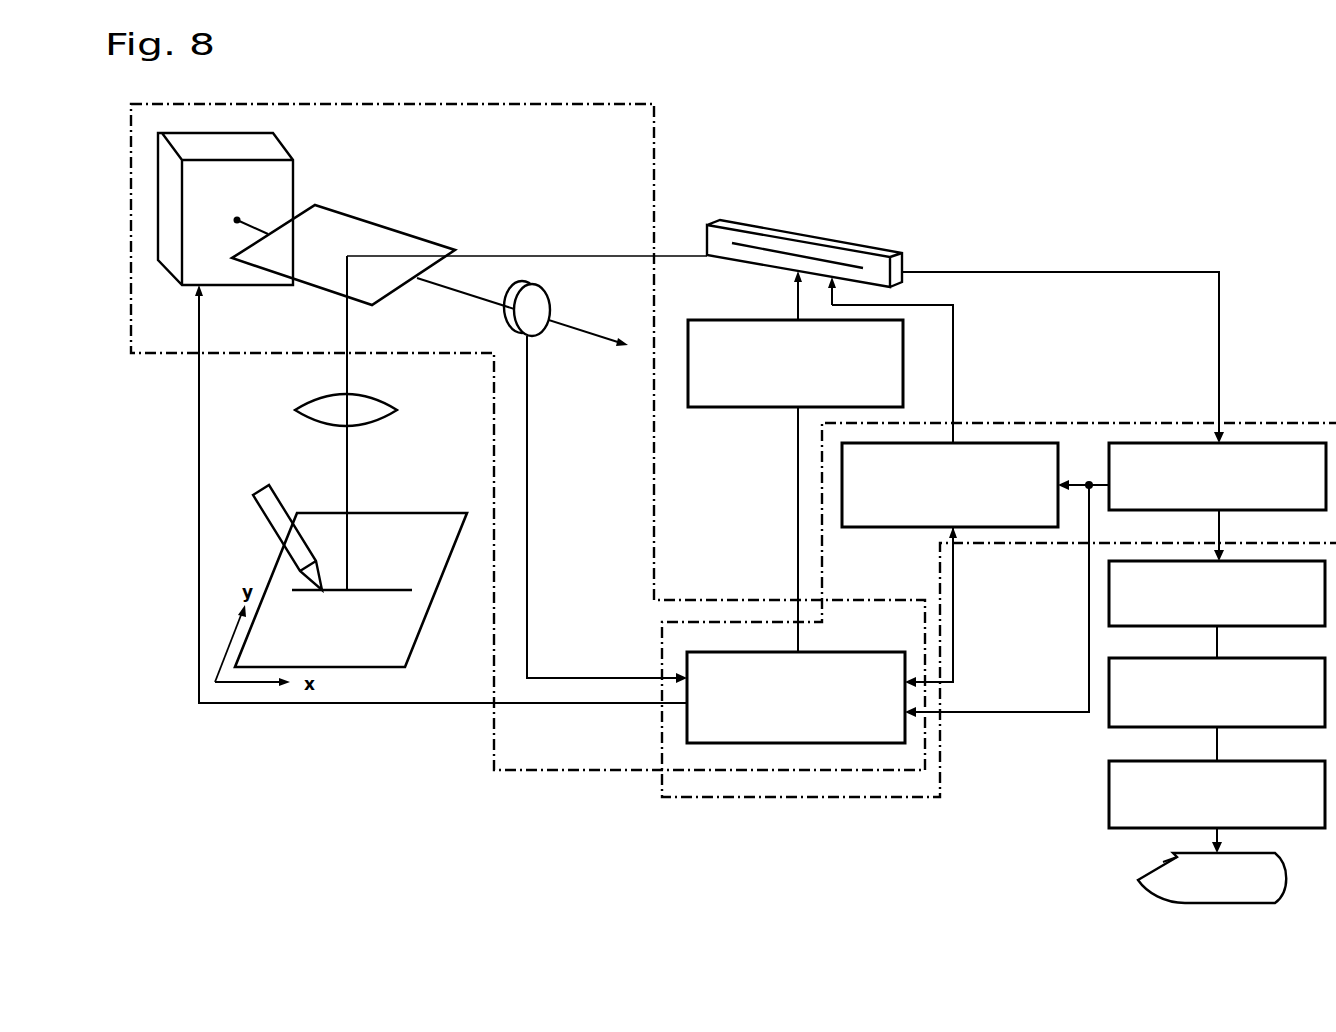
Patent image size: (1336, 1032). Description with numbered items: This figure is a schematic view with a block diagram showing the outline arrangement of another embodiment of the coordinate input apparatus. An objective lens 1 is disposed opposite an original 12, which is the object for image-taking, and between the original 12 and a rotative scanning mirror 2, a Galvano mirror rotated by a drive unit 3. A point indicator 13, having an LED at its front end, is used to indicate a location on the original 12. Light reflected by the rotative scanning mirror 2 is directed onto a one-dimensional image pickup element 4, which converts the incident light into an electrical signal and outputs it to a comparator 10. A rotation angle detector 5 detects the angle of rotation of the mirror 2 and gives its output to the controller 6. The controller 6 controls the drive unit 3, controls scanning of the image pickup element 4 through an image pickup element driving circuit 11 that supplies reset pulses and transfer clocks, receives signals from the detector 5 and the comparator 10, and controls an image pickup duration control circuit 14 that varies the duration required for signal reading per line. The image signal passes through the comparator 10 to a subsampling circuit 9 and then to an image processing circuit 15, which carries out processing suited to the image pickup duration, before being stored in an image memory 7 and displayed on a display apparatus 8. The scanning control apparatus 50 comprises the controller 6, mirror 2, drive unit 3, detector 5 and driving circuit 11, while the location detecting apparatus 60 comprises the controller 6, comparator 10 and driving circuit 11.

The objective lens 1 is at (295, 410).
The rotative scanning mirror 2 is at (365, 218).
The drive unit 3 is at (272, 148).
The one-dimensional image pickup element 4 is at (837, 242).
The rotation angle detector 5 is at (550, 290).
The controller 6 is at (840, 652).
The image memory 7 is at (1109, 805).
The display apparatus 8 is at (1163, 862).
The subsampling circuit 9 is at (1250, 626).
The comparator 10 is at (1266, 443).
The image pickup element driving circuit 11 is at (1012, 443).
The original 12 is at (422, 513).
The point indicator 13 is at (280, 500).
The image pickup duration control circuit 14 is at (732, 407).
The image processing circuit 15 is at (1242, 727).
The scanning control apparatus 50 is at (666, 110).
The location detecting apparatus 60 is at (1255, 402).